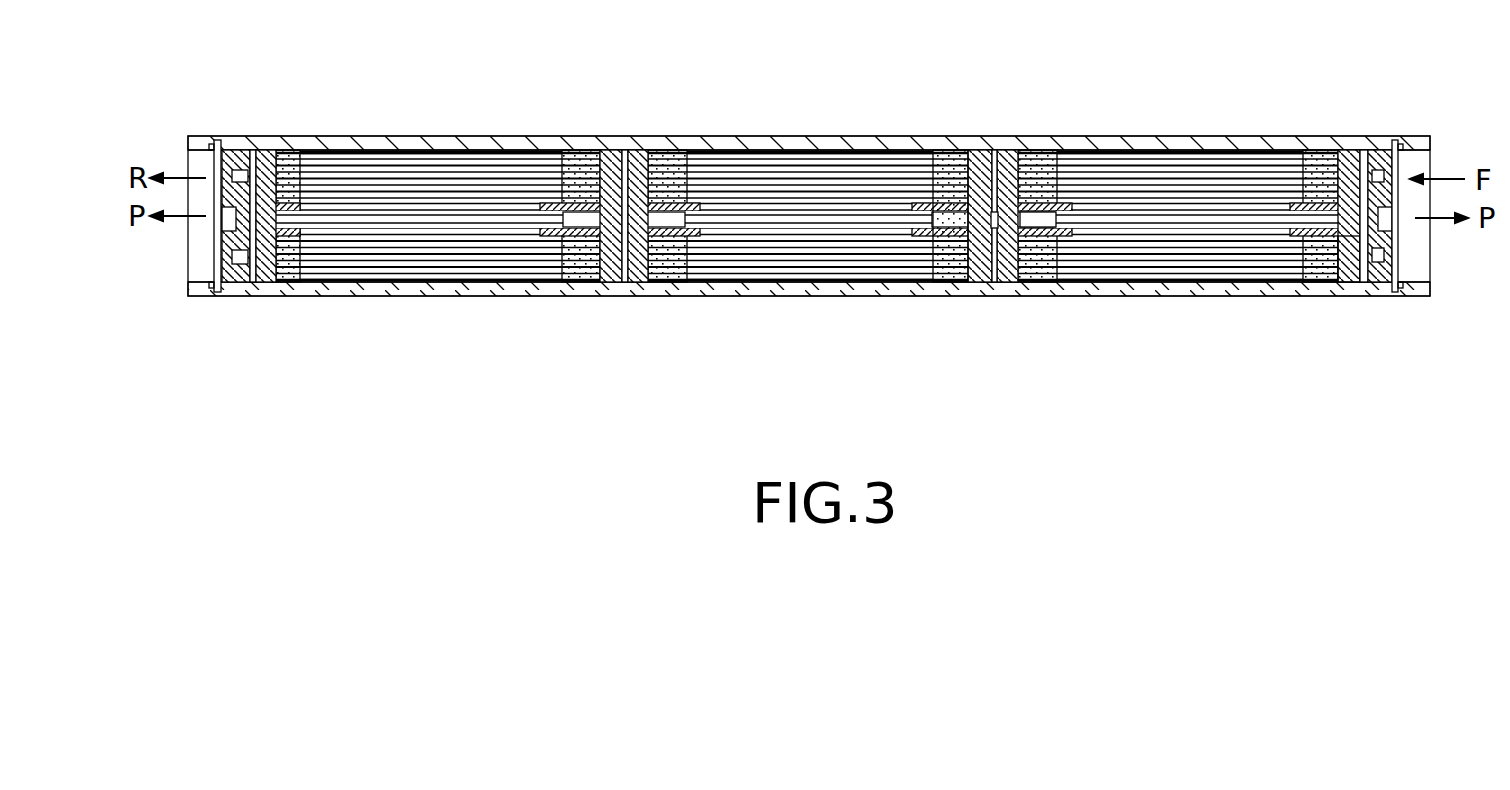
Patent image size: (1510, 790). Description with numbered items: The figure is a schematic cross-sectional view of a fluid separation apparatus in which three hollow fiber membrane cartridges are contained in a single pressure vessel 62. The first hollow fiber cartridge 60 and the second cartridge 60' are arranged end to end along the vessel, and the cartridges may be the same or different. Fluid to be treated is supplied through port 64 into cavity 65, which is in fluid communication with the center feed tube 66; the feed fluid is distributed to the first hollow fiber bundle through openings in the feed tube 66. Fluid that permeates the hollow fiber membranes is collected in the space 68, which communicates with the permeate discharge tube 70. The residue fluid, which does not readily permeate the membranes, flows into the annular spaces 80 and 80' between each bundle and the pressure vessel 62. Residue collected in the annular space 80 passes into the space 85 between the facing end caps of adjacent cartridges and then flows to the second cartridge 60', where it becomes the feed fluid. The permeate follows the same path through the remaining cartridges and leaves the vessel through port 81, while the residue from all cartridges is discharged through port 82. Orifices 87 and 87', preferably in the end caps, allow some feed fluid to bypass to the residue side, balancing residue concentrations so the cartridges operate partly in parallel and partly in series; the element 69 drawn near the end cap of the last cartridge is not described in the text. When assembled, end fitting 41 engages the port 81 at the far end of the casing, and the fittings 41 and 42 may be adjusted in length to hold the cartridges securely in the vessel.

The end fitting 41 is at (258, 228).
The fitting 42 is at (1395, 292).
The hollow fiber cartridge 60 is at (1180, 251).
The second hollow fiber cartridge 60' is at (810, 251).
The pressure vessel 62 is at (933, 150).
The port 64 is at (1387, 180).
The cavity 65 is at (1363, 152).
The center feed tube 66 is at (1177, 209).
The permeate space 68 is at (1001, 153).
The separator block 69 is at (1348, 284).
The permeate discharge tube 70 is at (1032, 220).
The annular space 80 is at (1180, 97).
The annular space 80' is at (810, 113).
The permeate port 81 is at (180, 216).
The residue port 82 is at (223, 173).
The space between end caps 85 is at (994, 284).
The orifice 87 is at (1328, 165).
The orifice 87' is at (1004, 165).